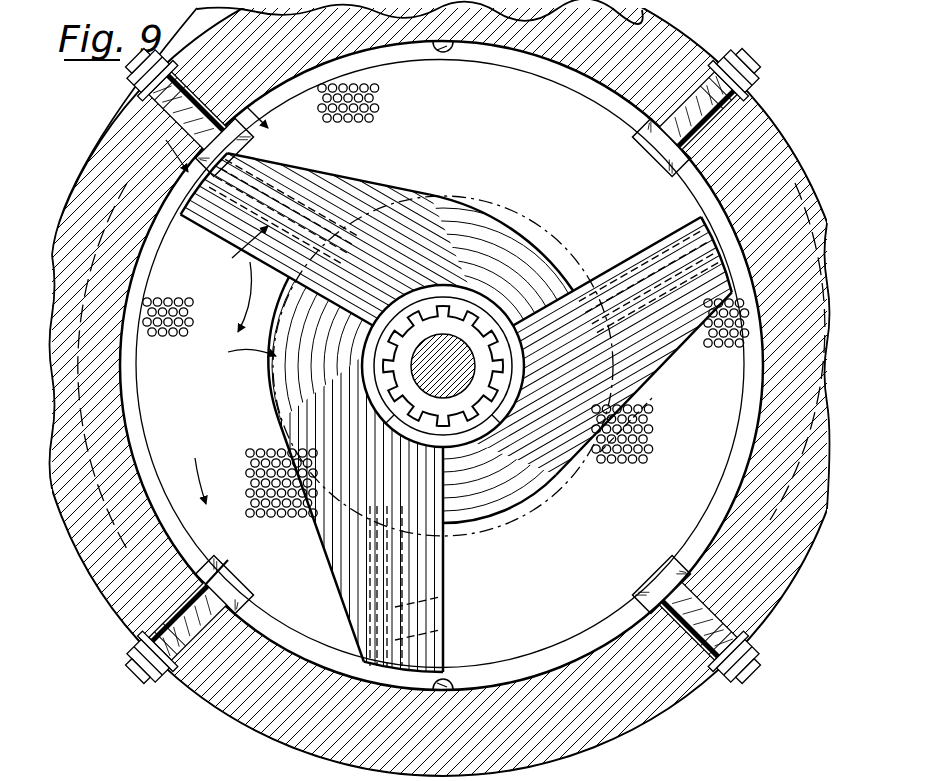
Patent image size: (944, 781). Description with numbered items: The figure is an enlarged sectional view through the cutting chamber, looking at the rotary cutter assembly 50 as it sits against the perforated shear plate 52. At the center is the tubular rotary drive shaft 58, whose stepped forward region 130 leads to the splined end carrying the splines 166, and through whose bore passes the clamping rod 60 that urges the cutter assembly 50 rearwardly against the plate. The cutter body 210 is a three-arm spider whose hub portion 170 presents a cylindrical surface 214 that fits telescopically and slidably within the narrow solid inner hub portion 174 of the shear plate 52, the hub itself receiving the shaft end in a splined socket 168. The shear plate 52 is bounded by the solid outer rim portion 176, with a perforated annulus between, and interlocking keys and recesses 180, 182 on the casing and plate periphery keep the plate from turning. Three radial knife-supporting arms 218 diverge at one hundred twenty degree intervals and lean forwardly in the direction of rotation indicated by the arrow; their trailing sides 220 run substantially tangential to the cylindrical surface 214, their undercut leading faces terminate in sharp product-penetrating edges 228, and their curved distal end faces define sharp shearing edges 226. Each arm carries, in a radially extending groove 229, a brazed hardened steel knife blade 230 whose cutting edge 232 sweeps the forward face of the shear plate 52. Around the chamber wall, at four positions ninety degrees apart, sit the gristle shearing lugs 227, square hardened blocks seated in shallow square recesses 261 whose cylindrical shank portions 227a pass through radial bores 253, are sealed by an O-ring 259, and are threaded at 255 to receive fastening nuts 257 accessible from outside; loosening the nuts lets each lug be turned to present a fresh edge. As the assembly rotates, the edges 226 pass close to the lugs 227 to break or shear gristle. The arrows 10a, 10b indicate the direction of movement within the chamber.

The flow path arrow 10a is at (189, 322).
The flow path arrow 10b is at (253, 182).
The rotary cutter assembly 50 is at (481, 372).
The perforated shear plate 52 is at (760, 582).
The tubular rotary drive shaft 58 is at (478, 300).
The clamping rod 60 is at (447, 342).
The stepped region 130 is at (566, 262).
The splines 166 is at (474, 420).
The splined socket 168 is at (385, 396).
The hub portion 170 is at (294, 418).
The inner peripheral hub portion 174 is at (536, 505).
The outer peripheral rim portion 176 is at (704, 518).
The key 180 is at (437, 55).
The recess 182 is at (449, 54).
The cutter body 210 is at (234, 353).
The cylindrical surface 214 is at (528, 243).
The radial knife-supporting arms 218 is at (320, 190).
The trailing sides 220 is at (285, 166).
The shearing edges 226 is at (188, 222).
The gristle shearing lugs 227 is at (228, 128).
The cylindrical shank portions 227a is at (178, 118).
The product-penetrating edges 228 is at (235, 262).
The groove 229 is at (650, 404).
The knife blade 230 is at (612, 262).
The cutting edge 232 is at (448, 622).
The radial bores 253 is at (150, 96).
The threads 255 is at (141, 676).
The fastening nuts 257 is at (132, 656).
The O-ring 259 is at (166, 62).
The square recesses 261 is at (216, 568).